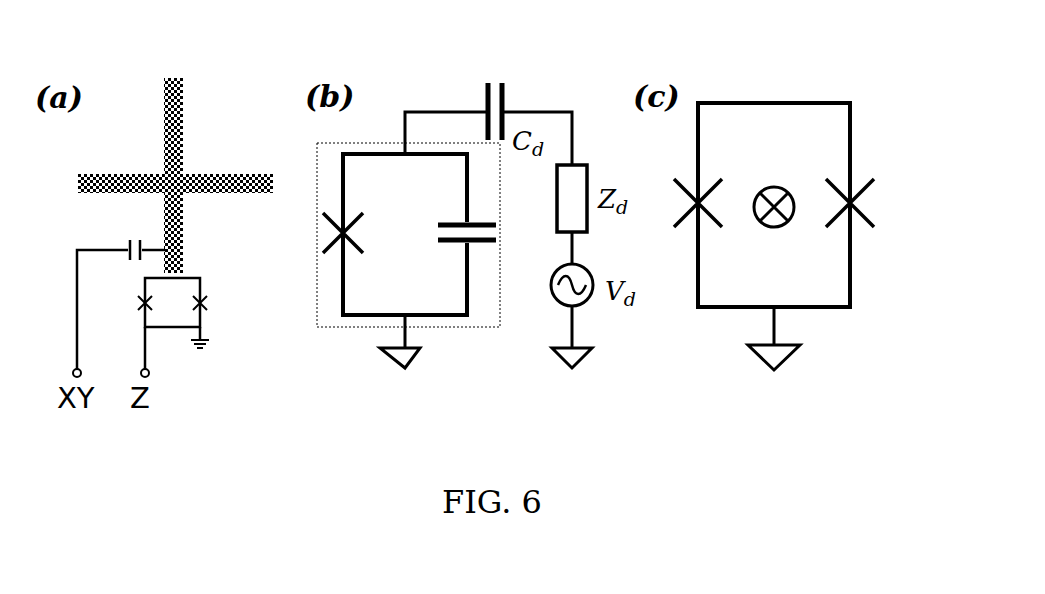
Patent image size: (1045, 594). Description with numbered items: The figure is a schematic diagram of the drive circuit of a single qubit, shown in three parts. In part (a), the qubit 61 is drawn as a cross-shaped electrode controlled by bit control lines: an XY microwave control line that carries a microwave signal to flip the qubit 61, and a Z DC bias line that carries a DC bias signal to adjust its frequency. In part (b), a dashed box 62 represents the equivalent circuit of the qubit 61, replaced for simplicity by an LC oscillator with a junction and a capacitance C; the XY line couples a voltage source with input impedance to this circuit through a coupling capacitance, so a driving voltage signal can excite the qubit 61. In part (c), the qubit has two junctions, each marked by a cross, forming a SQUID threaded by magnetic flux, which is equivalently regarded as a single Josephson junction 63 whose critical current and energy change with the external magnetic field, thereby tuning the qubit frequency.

The qubit 61 is at (184, 123).
The dashed box 62 is at (318, 288).
The Josephson junction 63 is at (852, 118).